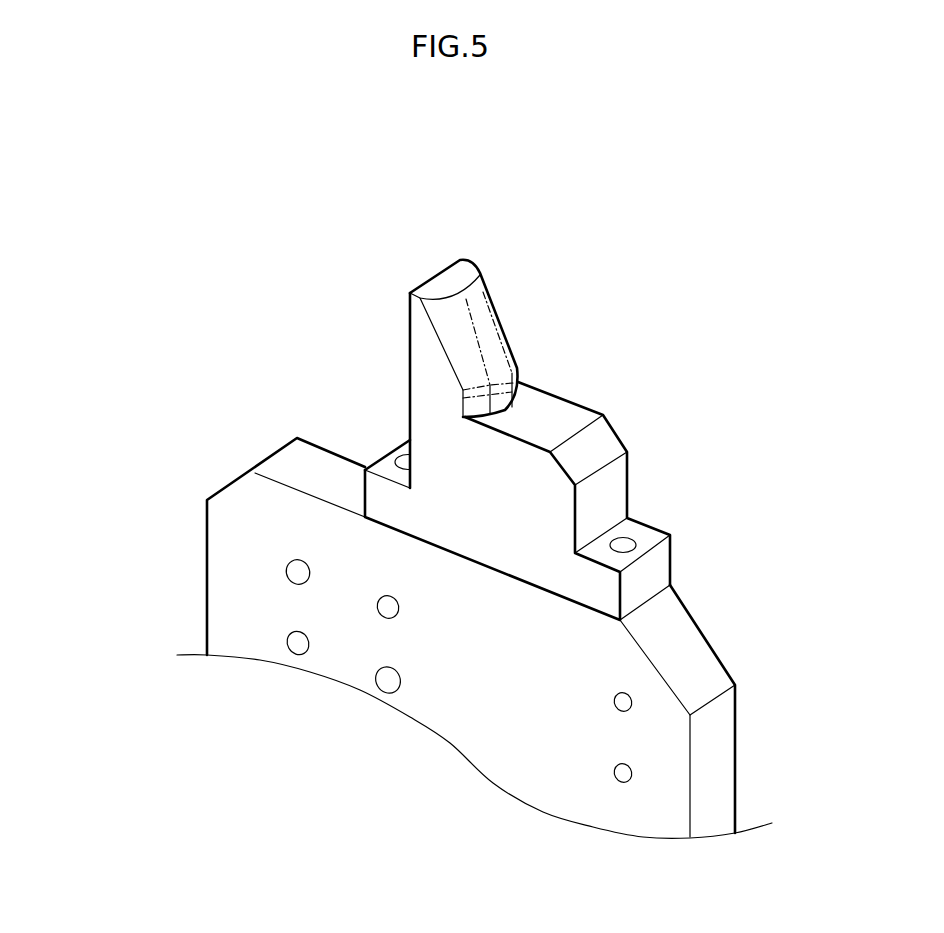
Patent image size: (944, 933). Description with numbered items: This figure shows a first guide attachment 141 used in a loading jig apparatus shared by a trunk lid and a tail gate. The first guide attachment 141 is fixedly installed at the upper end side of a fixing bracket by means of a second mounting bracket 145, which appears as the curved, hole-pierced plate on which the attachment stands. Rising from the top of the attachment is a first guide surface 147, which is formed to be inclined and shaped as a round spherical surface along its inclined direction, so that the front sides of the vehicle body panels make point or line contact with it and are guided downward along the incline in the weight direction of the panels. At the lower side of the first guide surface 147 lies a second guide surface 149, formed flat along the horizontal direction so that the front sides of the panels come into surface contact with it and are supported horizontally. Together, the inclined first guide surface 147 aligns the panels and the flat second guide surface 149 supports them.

The first guide attachment 141 is at (597, 337).
The second mounting bracket 145 is at (240, 528).
The first guide surface 147 is at (480, 336).
The second guide surface 149 is at (555, 419).